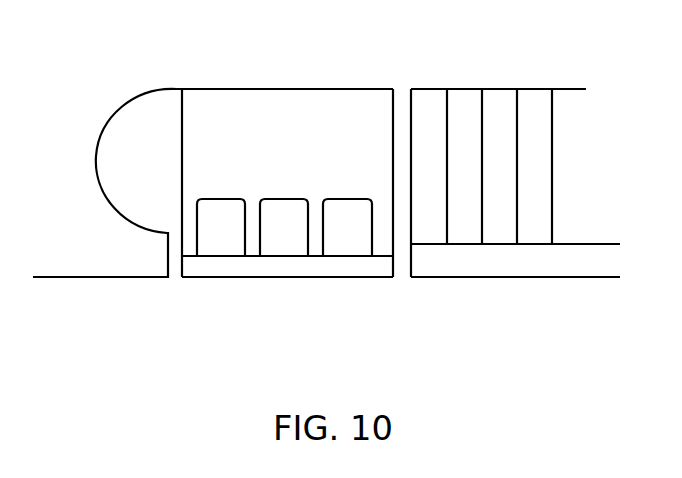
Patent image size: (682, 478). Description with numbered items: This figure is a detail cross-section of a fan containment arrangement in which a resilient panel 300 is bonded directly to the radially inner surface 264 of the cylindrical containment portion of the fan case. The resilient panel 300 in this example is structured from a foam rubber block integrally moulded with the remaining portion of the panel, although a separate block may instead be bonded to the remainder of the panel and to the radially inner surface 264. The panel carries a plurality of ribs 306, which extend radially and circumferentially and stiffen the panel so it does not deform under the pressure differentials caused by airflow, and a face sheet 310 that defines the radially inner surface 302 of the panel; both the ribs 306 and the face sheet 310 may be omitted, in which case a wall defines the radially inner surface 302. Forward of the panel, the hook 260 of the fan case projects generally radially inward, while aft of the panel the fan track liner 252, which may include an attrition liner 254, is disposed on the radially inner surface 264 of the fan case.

The fan track liner 252 is at (498, 117).
The attrition liner 254 is at (499, 263).
The hook 260 is at (120, 258).
The radially inner surface 264 is at (341, 78).
The resilient panel 300 is at (218, 128).
The radially inner surface of the panel 302 is at (290, 290).
The ribs 306 is at (250, 243).
The face sheet 310 is at (348, 268).